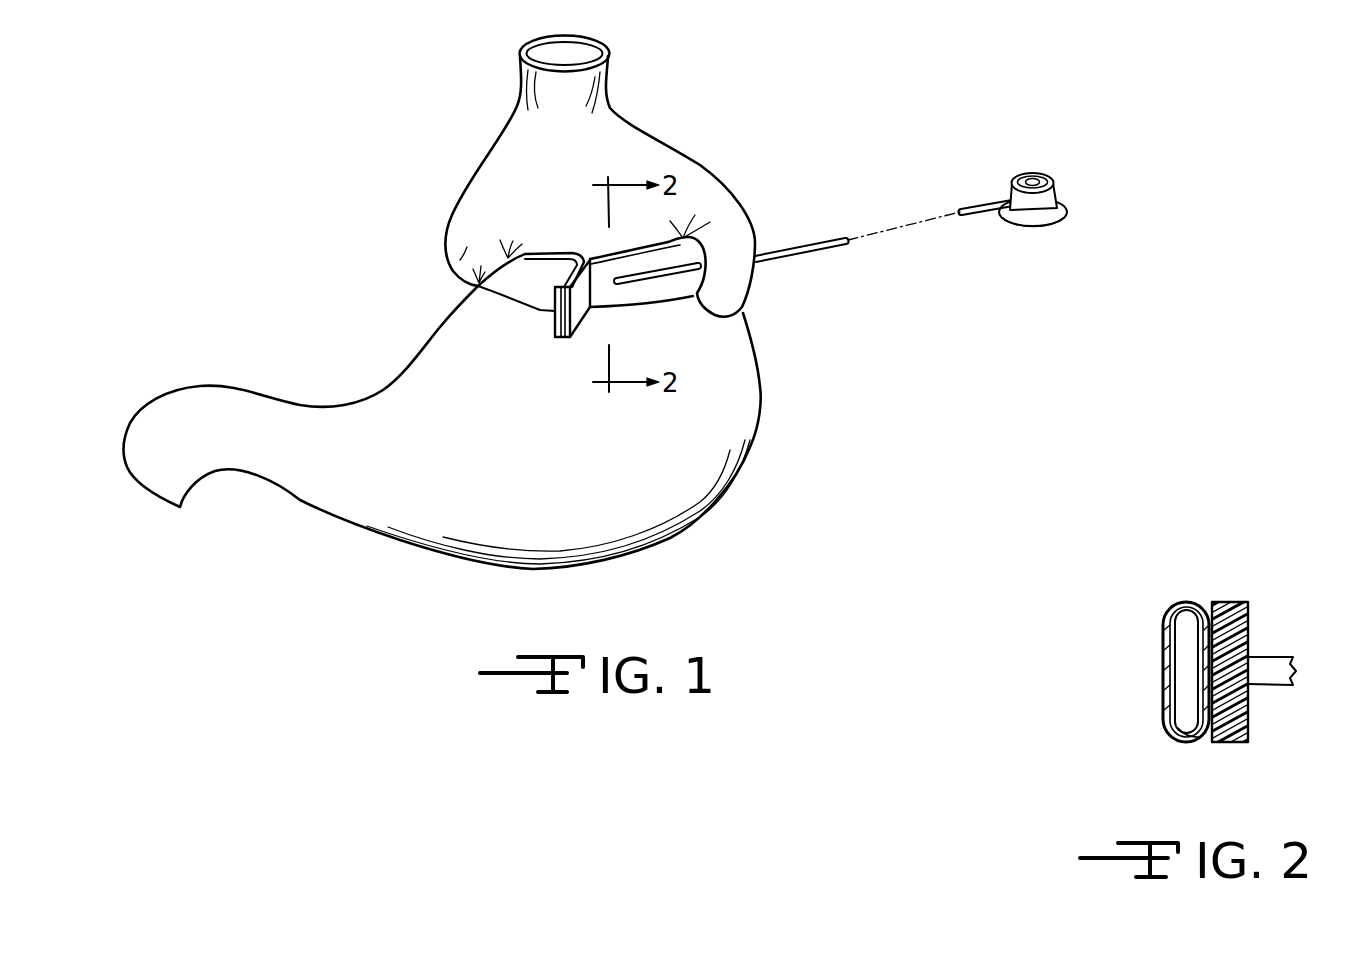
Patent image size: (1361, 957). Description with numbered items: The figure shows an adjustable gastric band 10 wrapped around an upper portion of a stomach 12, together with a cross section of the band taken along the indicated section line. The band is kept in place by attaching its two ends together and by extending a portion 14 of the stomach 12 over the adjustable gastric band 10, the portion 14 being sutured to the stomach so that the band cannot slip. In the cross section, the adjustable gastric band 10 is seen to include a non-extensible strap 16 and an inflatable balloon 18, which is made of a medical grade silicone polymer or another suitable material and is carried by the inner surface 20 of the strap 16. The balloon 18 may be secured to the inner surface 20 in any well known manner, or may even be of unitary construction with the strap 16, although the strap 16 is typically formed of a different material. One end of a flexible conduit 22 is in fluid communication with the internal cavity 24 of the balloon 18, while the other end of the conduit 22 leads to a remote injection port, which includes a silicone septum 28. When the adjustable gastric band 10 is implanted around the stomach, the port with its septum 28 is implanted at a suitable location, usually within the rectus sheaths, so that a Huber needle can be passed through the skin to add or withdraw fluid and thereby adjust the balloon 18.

In FIG. 1, the adjustable gastric band 10 is at (548, 290).
In FIG. 1, the stomach 12 is at (737, 396).
In FIG. 1, the portion of the stomach 14 is at (753, 277).
In FIG. 2, the non-extensible strap 16 is at (1240, 620).
In FIG. 2, the inflatable balloon 18 is at (1188, 602).
In FIG. 2, the inner surface 20 is at (1205, 743).
In FIG. 1, the flexible conduit 22 is at (828, 248).
In FIG. 2, the flexible conduit 22 is at (1293, 663).
In FIG. 2, the internal cavity 24 is at (1183, 675).
In FIG. 1, the silicone septum 28 is at (1032, 175).